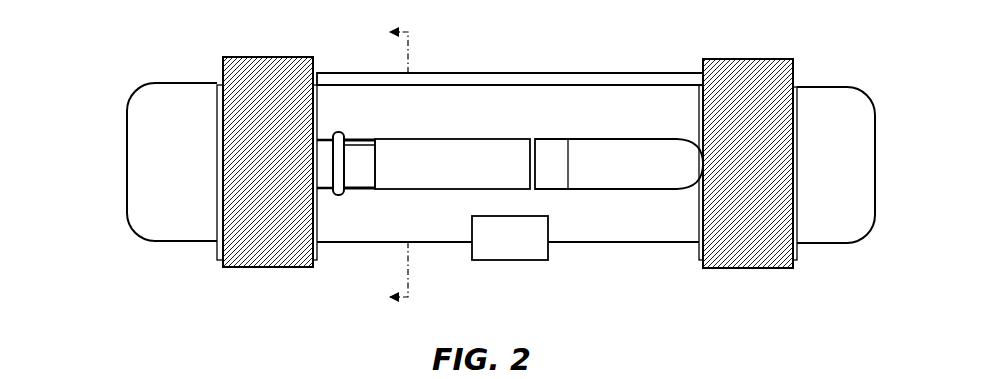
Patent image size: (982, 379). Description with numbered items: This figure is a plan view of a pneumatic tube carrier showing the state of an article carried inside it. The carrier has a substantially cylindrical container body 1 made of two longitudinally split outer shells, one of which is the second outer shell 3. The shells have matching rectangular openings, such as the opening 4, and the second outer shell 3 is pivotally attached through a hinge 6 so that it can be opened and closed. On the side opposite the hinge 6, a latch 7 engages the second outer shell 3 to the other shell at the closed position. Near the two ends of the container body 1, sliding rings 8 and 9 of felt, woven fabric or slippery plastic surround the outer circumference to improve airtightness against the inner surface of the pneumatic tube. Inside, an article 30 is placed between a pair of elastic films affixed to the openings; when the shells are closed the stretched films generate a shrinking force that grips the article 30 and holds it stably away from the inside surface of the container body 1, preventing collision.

The container body 1 is at (860, 82).
The second outer shell 3 is at (617, 242).
The rectangular opening 4 is at (387, 166).
The hinge 6 is at (580, 73).
The latch 7 is at (517, 260).
The sliding ring 8 is at (753, 59).
The sliding ring 9 is at (263, 58).
The article 30 is at (413, 190).